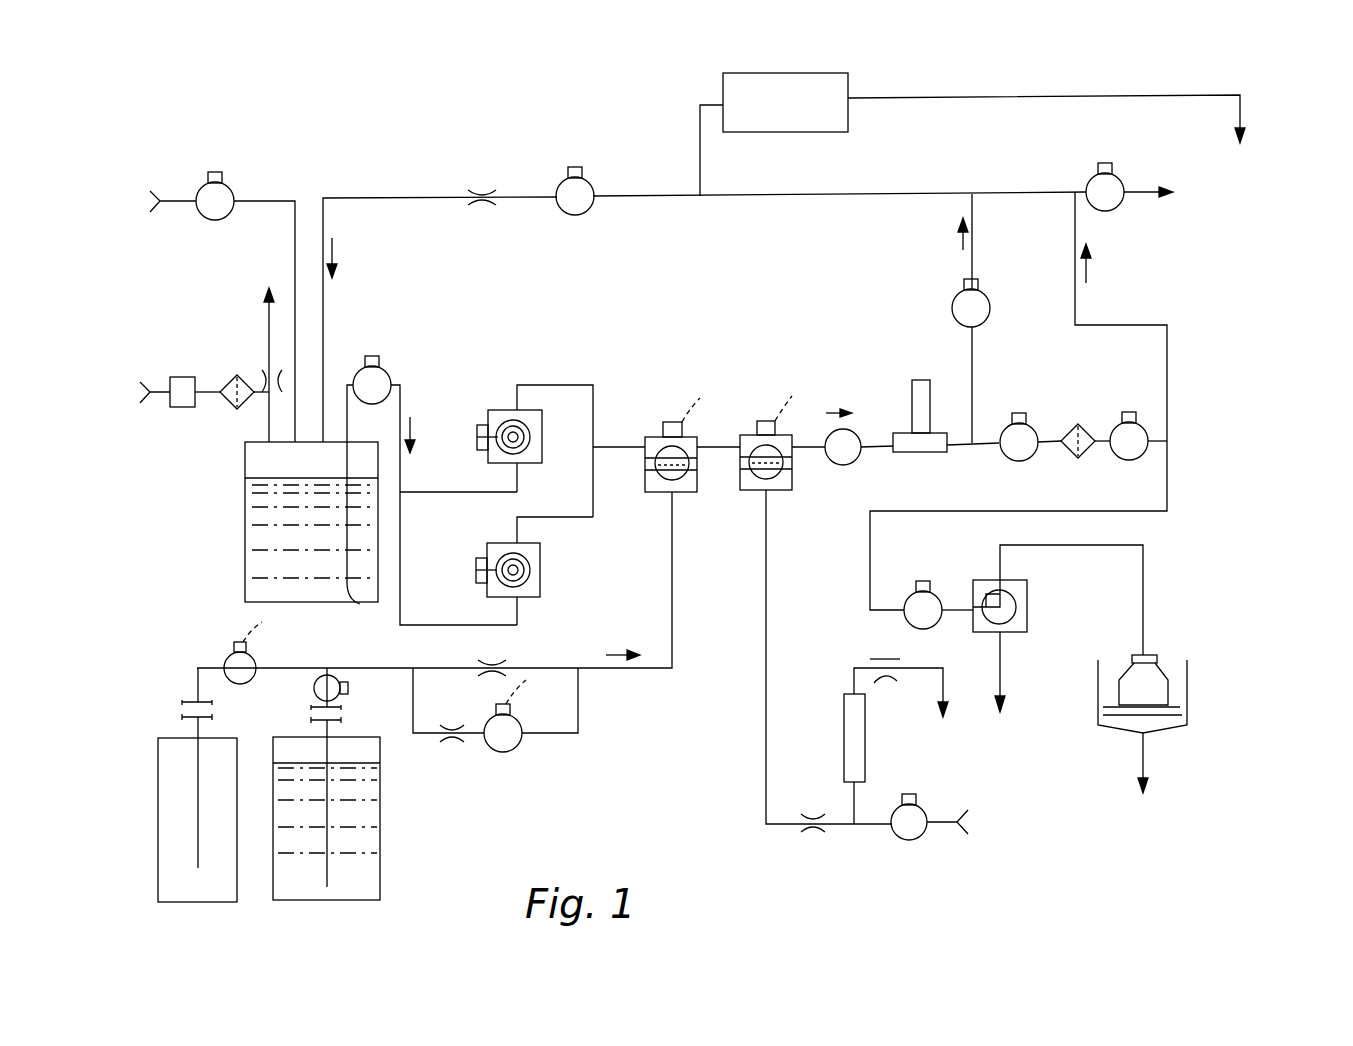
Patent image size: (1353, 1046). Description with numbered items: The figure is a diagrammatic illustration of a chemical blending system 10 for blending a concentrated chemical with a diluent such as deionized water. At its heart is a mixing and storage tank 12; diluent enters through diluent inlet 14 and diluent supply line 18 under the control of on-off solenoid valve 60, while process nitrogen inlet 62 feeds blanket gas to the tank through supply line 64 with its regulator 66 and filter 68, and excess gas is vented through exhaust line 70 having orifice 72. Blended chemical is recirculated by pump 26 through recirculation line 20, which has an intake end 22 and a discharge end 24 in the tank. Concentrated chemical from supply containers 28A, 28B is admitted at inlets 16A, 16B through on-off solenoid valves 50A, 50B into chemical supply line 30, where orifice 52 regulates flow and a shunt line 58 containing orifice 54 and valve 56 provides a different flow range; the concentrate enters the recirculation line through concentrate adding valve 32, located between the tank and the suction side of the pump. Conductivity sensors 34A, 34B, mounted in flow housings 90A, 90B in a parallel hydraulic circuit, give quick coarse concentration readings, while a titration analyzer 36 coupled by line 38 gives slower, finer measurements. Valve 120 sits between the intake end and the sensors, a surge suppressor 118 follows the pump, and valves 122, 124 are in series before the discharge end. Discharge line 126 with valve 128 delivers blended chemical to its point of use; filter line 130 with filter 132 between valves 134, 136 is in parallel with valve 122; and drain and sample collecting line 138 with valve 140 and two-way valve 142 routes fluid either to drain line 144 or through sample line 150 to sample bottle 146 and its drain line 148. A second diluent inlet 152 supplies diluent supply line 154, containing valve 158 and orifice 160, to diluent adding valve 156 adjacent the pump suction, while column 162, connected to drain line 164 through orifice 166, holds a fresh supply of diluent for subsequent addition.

The chemical blending system 10 is at (1270, 240).
The mixing and storage tank 12 is at (248, 556).
The diluent inlet 14 is at (160, 199).
The concentrated chemical inlet 16A is at (344, 715).
The concentrated chemical inlet 16B is at (180, 708).
The diluent supply line 18 is at (292, 194).
The recirculation line 20 is at (648, 186).
The intake end 22 is at (361, 606).
The discharge end 24 is at (322, 452).
The pump 26 is at (828, 462).
The supply container 28A is at (370, 862).
The supply container 28B is at (240, 894).
The chemical supply line 30 is at (654, 680).
The concentrate adding valve 32 is at (660, 436).
The conductivity sensor 34A is at (512, 410).
The conductivity sensor 34B is at (530, 562).
The titration analyzer 36 is at (850, 116).
The line 38 is at (696, 108).
The on-off solenoid valve 50A is at (314, 692).
The on-off solenoid valve 50B is at (256, 660).
The orifice 52 is at (494, 652).
The orifice 54 is at (456, 744).
The on-off solenoid valve 56 is at (518, 722).
The shunt line 58 is at (580, 708).
The on-off solenoid valve 60 is at (232, 186).
The process nitrogen inlet 62 is at (148, 398).
The supply line 64 is at (266, 430).
The regulator 66 is at (190, 376).
The filter 68 is at (242, 378).
The exhaust line 70 is at (265, 314).
The orifice 72 is at (280, 382).
The flow housing 90A is at (528, 445).
The flow housing 90B is at (541, 580).
The surge suppressor 118 is at (910, 380).
The on-off solenoid valve 120 is at (378, 366).
The on-off solenoid valve 122 is at (988, 292).
The on-off solenoid valve 124 is at (590, 213).
The discharge line 126 is at (1134, 184).
The on-off solenoid valve 128 is at (1090, 182).
The filter line 130 is at (1168, 395).
The filter 132 is at (1070, 424).
The on-off solenoid valve 134 is at (1038, 413).
The on-off solenoid valve 136 is at (1140, 412).
The drain and sample collecting line 138 is at (990, 450).
The on-off solenoid valve 140 is at (934, 626).
The two-way valve 142 is at (1020, 590).
The drain line 144 is at (1002, 664).
The sample bottle 146 is at (1150, 676).
The drain line 148 is at (1145, 750).
The sample line 150 is at (1144, 582).
The diluent inlet 152 is at (960, 836).
The diluent supply line 154 is at (764, 772).
The diluent adding valve 156 is at (750, 434).
The on-off solenoid valve 158 is at (897, 838).
The orifice 160 is at (811, 832).
The column 162 is at (865, 750).
The drain line 164 is at (936, 678).
The orifice 166 is at (878, 658).